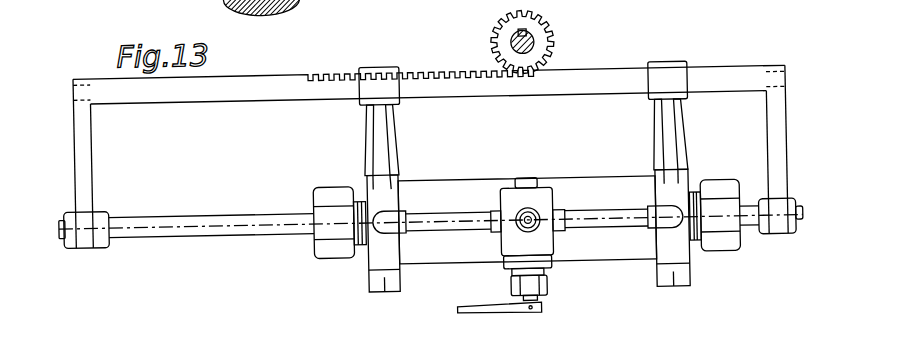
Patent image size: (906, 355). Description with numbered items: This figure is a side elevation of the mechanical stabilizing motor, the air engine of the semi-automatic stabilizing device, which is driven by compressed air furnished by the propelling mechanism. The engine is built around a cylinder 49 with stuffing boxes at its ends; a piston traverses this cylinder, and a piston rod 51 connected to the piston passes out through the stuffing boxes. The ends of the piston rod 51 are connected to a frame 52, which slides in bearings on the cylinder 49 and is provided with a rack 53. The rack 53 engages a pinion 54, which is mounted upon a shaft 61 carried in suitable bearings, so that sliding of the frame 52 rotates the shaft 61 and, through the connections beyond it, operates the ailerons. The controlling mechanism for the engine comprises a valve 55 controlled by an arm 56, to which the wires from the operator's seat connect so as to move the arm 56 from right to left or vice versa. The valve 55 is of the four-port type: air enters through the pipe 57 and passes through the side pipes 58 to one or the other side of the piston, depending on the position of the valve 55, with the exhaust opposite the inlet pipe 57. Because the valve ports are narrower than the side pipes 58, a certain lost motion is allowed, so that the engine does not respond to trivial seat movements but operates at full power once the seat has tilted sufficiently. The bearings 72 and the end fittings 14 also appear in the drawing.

The shaft end bearing 14 is at (57, 228).
The cylinder 49 is at (614, 174).
The piston rod 51 is at (287, 232).
The frame 52 is at (221, 100).
The rack 53 is at (417, 80).
The pinion 54 is at (543, 49).
The valve 55 is at (551, 197).
The arm 56 is at (500, 319).
The pipe 57 is at (537, 232).
The side pipes 58 is at (456, 223).
The shaft 61 is at (531, 46).
The bearings 72 is at (270, 13).